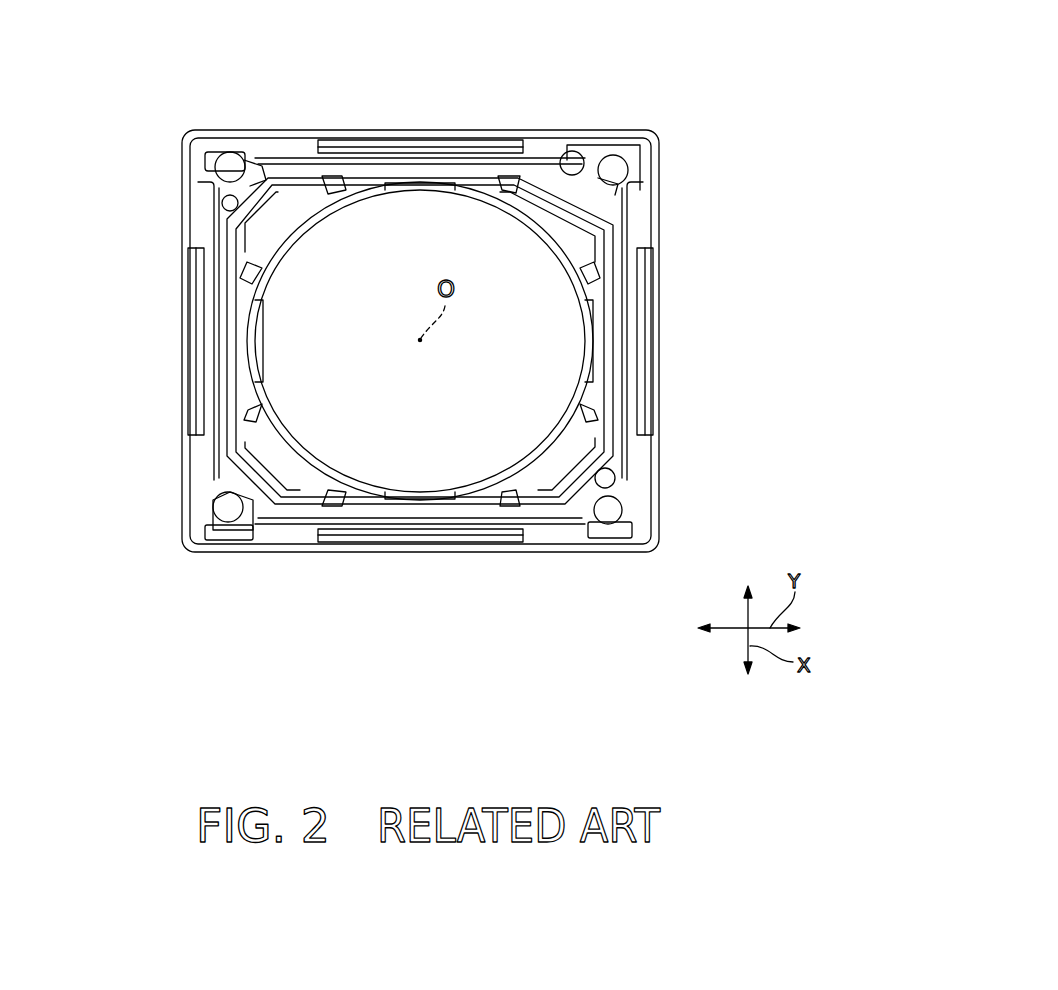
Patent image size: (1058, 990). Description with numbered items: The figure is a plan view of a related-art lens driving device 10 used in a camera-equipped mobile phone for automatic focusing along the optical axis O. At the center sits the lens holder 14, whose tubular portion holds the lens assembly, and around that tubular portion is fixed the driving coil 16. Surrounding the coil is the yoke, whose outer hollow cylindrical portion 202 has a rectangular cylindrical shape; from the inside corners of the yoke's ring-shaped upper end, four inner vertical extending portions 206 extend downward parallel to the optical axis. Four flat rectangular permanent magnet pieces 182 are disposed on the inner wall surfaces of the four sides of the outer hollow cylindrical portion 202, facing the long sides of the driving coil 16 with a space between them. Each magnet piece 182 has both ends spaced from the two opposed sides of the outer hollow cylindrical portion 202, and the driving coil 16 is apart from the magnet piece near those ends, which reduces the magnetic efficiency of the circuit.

The lens driving device 10 is at (706, 104).
The lens holder 14 is at (384, 196).
The driving coil 16 is at (267, 180).
The permanent magnet piece 182 is at (542, 152).
The outer hollow cylindrical portion 202 is at (652, 218).
The inner vertical extending portion 206 is at (565, 203).